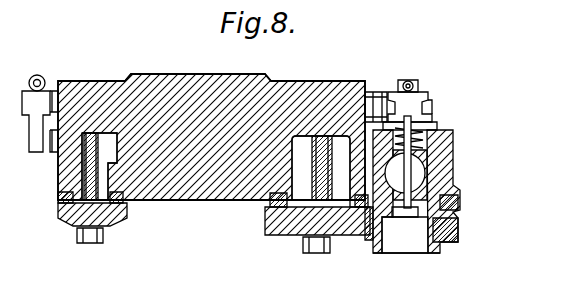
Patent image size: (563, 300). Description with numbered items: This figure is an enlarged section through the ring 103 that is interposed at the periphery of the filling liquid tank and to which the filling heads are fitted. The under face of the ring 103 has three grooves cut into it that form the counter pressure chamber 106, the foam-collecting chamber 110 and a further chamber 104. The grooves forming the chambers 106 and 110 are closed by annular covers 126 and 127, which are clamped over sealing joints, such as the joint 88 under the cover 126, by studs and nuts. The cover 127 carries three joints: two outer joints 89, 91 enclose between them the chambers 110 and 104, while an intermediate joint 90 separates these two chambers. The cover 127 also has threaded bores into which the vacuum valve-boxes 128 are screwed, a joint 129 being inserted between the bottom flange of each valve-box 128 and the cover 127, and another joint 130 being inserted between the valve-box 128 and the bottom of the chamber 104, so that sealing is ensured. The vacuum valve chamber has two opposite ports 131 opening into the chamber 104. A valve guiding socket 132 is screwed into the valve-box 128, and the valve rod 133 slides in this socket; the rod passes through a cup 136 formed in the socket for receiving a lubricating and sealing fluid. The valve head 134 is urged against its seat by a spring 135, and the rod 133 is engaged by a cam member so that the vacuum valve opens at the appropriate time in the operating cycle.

The ring 103 is at (307, 90).
The counter pressure chamber 106 is at (110, 153).
The sealing joint 88 is at (58, 203).
The annular cover 126 is at (124, 218).
The outer joint 89 is at (287, 203).
The foam-collecting chamber 110 is at (292, 228).
The annular cover 127 is at (293, 237).
The intermediate joint 90 is at (352, 212).
The joint 129 is at (364, 235).
The joint 130 is at (375, 92).
The spring 135 is at (428, 98).
The valve guiding socket 132 is at (432, 122).
The cup 136 is at (445, 148).
The valve rod 133 is at (418, 178).
The chamber 104 is at (458, 193).
The port 131 is at (458, 210).
The vacuum valve-box 128 is at (458, 235).
The outer joint 91 is at (460, 225).
The valve head 134 is at (405, 235).